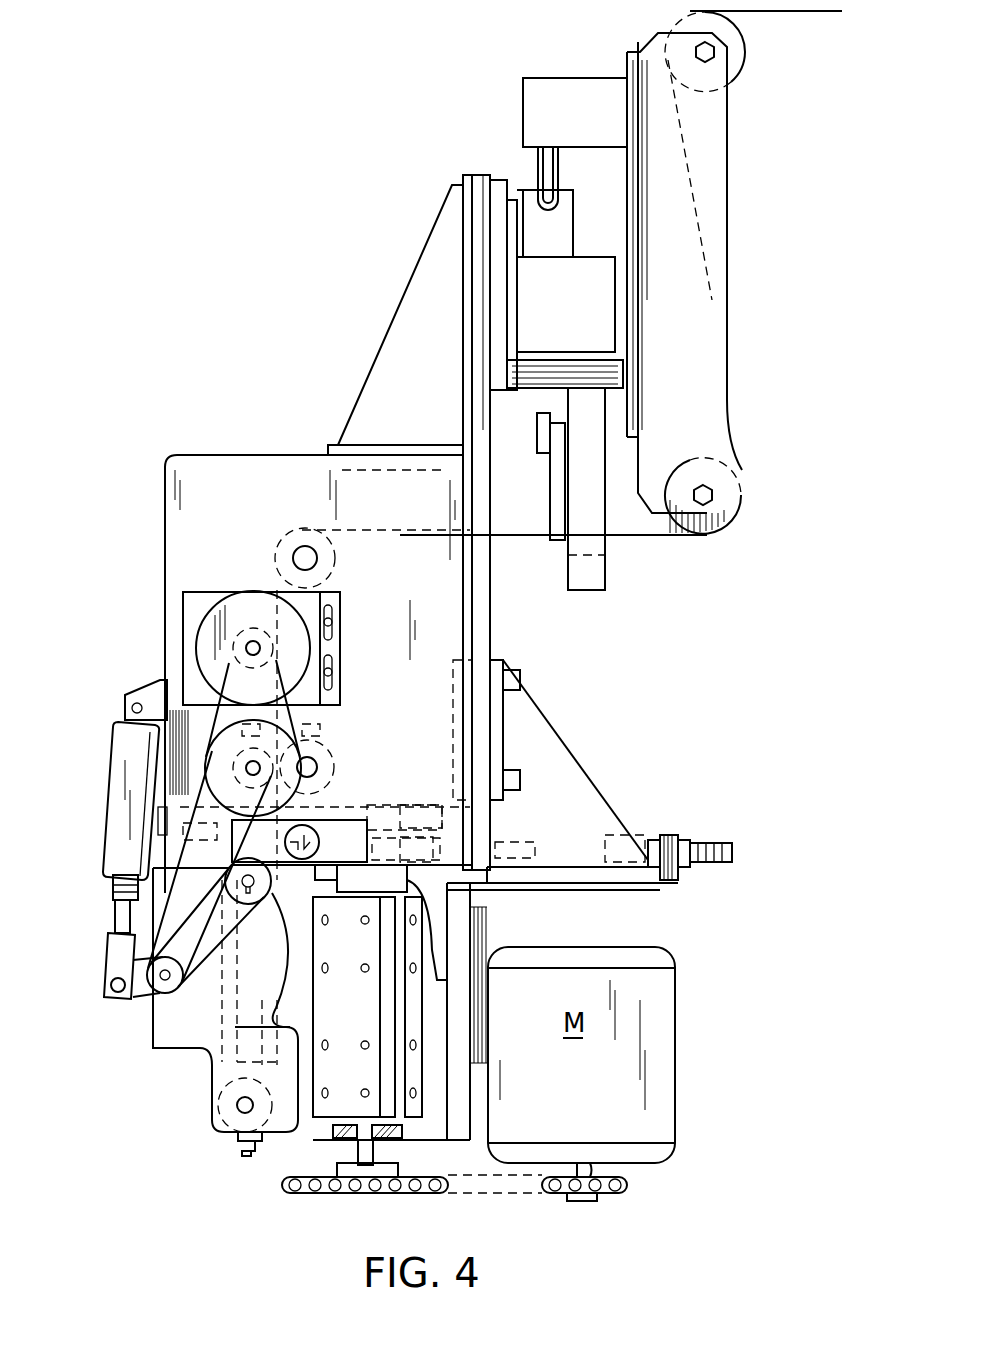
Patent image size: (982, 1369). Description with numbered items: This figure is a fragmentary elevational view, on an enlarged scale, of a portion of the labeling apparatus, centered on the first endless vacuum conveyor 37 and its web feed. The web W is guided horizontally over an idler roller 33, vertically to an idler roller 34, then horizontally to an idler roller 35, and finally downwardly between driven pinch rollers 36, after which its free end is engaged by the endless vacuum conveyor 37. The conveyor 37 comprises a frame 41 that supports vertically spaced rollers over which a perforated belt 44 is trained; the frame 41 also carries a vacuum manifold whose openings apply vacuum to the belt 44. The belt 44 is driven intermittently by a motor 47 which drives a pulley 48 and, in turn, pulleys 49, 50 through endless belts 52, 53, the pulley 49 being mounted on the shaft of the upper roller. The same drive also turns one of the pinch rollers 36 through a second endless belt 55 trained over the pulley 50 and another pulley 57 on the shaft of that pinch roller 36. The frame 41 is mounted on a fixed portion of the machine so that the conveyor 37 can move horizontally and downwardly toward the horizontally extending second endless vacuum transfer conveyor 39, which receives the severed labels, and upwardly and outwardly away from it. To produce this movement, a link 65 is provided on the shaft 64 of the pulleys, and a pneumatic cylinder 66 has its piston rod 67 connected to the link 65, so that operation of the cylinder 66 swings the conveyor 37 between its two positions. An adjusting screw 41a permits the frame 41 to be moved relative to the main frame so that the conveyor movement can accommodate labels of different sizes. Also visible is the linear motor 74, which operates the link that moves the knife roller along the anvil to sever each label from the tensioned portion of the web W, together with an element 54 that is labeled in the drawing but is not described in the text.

The web W is at (805, 11).
The idler roller 33 is at (742, 60).
The idler roller 34 is at (745, 500).
The idler roller 35 is at (290, 535).
The driven pinch roller 36 is at (318, 756).
The endless vacuum conveyor 37 is at (295, 985).
The endless vacuum transfer conveyor 39 is at (330, 1140).
The frame 41 is at (455, 622).
The adjusting screw 41a is at (705, 840).
The perforated belt 44 is at (215, 1075).
The motor 47 is at (210, 650).
The pulley 48 is at (183, 625).
The pulley 49 is at (115, 765).
The pulley 50 is at (160, 995).
The endless belt 52 is at (225, 880).
The endless belt 53 is at (190, 995).
The cylinder 54 is at (300, 870).
The second endless belt 55 is at (302, 717).
The pulley 57 is at (300, 778).
The shaft 64 is at (105, 965).
The link 65 is at (140, 990).
The pneumatic cylinder 66 is at (115, 825).
The piston rod 67 is at (115, 915).
The linear motor 74 is at (302, 835).